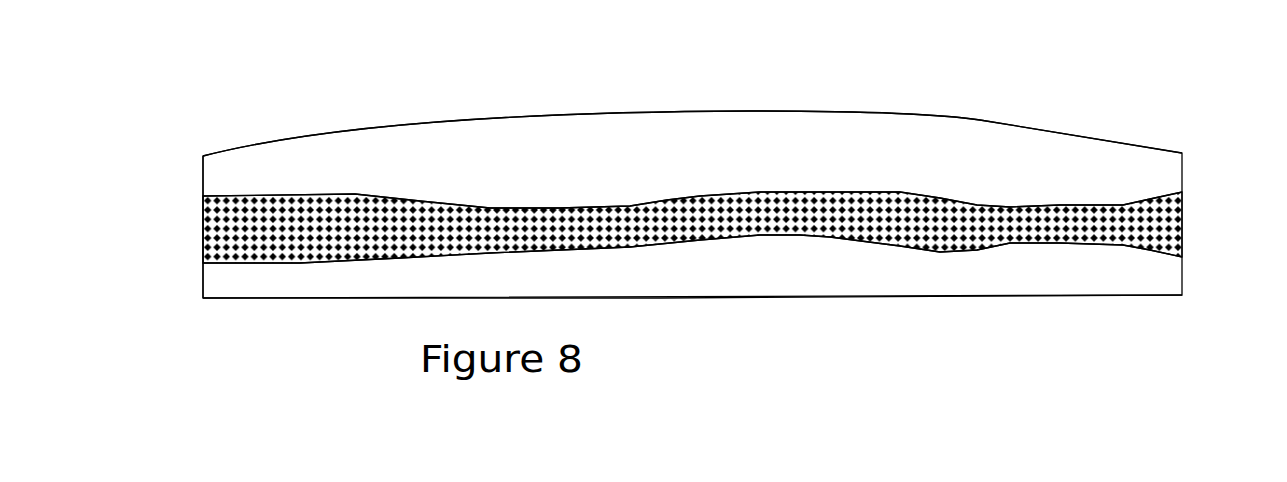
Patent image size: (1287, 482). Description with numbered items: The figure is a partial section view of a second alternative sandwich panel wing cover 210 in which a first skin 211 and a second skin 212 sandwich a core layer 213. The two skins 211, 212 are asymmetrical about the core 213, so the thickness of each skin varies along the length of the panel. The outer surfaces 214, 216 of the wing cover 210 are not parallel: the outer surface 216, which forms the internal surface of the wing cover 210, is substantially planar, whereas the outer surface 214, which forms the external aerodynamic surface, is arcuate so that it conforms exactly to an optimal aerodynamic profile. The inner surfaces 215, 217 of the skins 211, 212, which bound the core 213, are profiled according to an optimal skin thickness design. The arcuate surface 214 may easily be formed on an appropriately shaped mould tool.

The sandwich panel wing cover 210 is at (1171, 104).
The first skin 211 is at (201, 150).
The second skin 212 is at (202, 307).
The core layer 213 is at (1198, 216).
The outer surface 214 is at (990, 102).
The inner surface 215 is at (716, 183).
The outer surface 216 is at (671, 304).
The inner surface 217 is at (1042, 259).